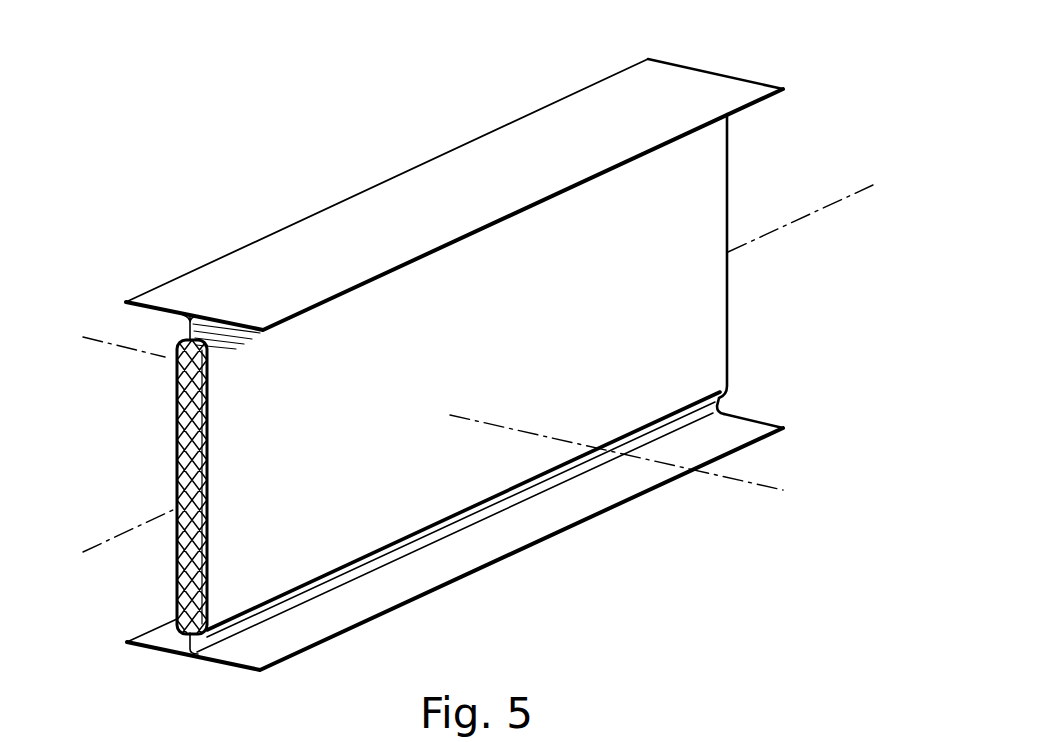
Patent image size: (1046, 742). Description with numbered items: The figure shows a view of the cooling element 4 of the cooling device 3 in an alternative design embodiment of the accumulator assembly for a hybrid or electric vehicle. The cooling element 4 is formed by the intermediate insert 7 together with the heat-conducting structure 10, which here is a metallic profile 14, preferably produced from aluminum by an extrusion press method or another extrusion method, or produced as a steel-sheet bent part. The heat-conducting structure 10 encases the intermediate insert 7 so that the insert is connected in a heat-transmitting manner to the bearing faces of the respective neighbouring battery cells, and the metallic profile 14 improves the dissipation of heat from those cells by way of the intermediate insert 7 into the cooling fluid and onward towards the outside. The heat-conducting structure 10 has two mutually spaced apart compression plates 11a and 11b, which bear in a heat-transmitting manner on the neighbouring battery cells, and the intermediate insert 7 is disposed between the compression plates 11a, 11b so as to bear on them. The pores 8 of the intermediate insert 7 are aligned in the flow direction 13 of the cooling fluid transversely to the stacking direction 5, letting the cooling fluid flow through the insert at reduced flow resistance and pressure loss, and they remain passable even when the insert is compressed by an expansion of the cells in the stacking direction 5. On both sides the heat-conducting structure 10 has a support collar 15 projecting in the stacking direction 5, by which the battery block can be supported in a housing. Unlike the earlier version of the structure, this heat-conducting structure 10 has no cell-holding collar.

The cooling device 3 is at (463, 339).
The cooling element 4 is at (463, 339).
The stacking direction 5 is at (778, 493).
The intermediate insert 7 is at (130, 480).
The pores 8 is at (130, 480).
The heat-conducting structure 10 is at (454, 194).
The compression plate 11a is at (178, 369).
The compression plate 11b is at (452, 462).
The flow direction 13 is at (808, 218).
The metallic profile 14 is at (316, 235).
The support collar 15 is at (454, 354).